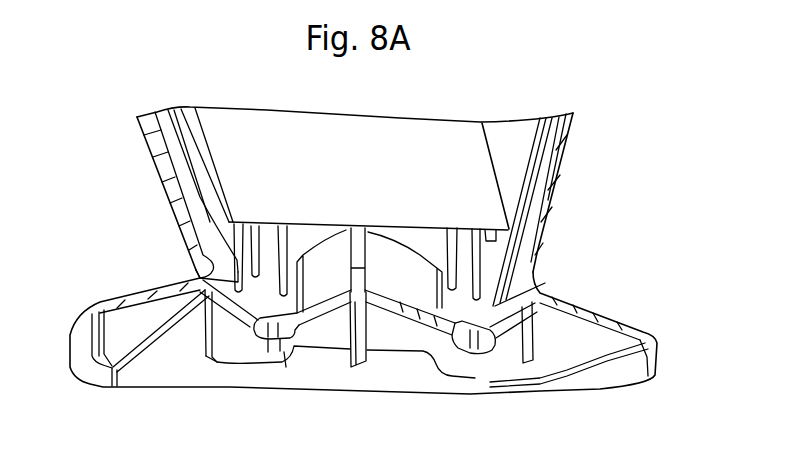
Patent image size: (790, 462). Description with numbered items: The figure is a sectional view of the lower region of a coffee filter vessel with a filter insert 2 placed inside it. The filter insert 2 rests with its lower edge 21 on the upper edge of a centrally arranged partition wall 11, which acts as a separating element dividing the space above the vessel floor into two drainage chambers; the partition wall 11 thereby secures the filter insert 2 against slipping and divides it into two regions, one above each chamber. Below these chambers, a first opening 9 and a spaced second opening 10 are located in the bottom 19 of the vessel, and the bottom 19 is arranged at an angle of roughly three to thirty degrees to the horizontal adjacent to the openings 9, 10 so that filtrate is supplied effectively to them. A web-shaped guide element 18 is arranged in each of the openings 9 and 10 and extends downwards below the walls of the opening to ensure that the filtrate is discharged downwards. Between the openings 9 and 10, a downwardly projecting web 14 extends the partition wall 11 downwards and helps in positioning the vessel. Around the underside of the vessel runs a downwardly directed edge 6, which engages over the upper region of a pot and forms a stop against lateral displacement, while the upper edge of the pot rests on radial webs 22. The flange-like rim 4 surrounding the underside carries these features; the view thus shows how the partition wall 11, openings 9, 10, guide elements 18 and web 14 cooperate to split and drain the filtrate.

The filter insert 2 is at (460, 137).
The flange 4 is at (144, 293).
The downwardly directed edge 6 is at (77, 342).
The first opening 9 is at (281, 339).
The second opening 10 is at (482, 347).
The partition wall 11 is at (356, 246).
The downwardly projecting web 14 is at (368, 340).
The web-shaped guide element 18 is at (277, 340).
The bottom 19 is at (310, 313).
The lower edge 21 is at (467, 230).
The radial webs 22 is at (177, 350).